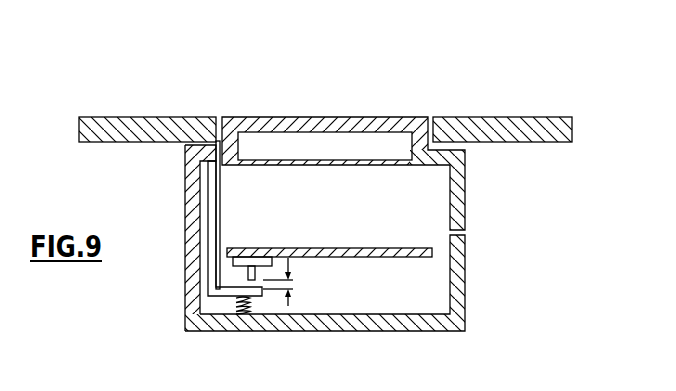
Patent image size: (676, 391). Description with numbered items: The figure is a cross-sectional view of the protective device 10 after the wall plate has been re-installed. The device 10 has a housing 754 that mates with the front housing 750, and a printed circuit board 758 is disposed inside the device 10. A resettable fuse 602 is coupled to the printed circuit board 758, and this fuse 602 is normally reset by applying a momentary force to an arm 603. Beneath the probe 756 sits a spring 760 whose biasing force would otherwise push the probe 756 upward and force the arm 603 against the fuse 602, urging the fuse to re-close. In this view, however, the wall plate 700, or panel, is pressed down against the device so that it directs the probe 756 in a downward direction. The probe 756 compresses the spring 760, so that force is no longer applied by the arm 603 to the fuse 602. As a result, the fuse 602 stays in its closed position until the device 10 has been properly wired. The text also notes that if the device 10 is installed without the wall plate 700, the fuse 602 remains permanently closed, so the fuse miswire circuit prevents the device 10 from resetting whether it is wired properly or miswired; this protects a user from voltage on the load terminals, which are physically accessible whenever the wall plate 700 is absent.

The device 10 is at (470, 102).
The wall plate 700 is at (120, 124).
The front housing 750 is at (193, 195).
The housing 754 is at (187, 288).
The probe 756 is at (221, 192).
The printed circuit board 758 is at (361, 250).
The resettable fuse 602 is at (272, 266).
The arm 603 is at (233, 268).
The spring 760 is at (251, 309).